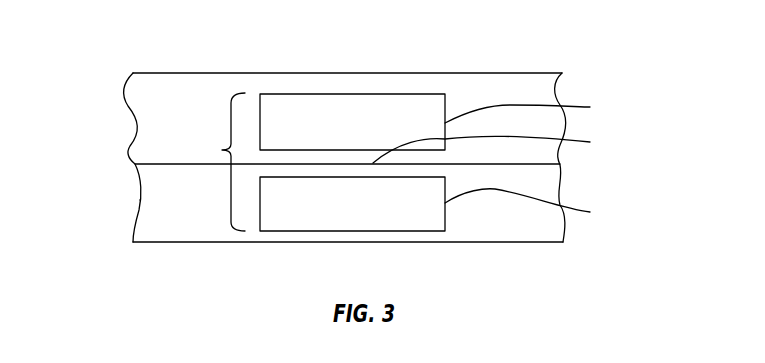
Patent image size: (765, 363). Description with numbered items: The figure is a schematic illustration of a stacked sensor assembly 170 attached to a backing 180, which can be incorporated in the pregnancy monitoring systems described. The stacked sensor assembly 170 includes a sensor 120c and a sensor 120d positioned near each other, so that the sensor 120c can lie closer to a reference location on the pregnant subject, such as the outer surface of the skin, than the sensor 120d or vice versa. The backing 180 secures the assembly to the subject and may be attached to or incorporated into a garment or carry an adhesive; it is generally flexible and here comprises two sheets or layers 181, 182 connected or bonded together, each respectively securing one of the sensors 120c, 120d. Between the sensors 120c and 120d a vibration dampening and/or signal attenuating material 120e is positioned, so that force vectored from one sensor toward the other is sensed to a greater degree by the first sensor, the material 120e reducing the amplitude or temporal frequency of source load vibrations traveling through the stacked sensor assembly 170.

The backing 180 is at (246, 72).
The layer 182 is at (463, 88).
The layer 181 is at (189, 217).
The stacked sensor assembly 170 is at (222, 150).
The sensor 120c is at (590, 107).
The vibration dampening and/or signal attenuating material 120e is at (590, 142).
The sensor 120d is at (590, 212).